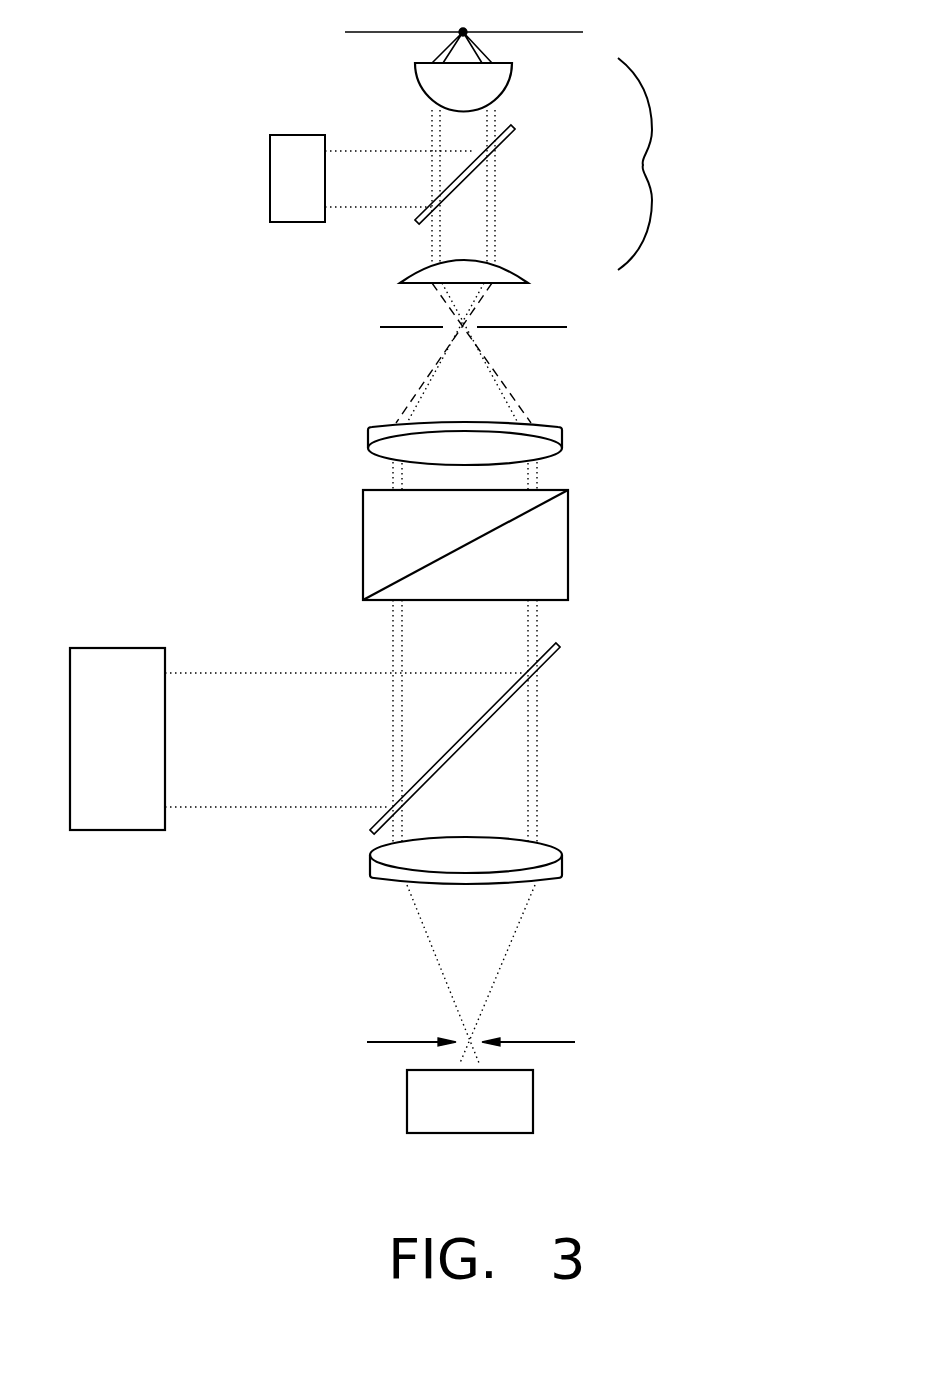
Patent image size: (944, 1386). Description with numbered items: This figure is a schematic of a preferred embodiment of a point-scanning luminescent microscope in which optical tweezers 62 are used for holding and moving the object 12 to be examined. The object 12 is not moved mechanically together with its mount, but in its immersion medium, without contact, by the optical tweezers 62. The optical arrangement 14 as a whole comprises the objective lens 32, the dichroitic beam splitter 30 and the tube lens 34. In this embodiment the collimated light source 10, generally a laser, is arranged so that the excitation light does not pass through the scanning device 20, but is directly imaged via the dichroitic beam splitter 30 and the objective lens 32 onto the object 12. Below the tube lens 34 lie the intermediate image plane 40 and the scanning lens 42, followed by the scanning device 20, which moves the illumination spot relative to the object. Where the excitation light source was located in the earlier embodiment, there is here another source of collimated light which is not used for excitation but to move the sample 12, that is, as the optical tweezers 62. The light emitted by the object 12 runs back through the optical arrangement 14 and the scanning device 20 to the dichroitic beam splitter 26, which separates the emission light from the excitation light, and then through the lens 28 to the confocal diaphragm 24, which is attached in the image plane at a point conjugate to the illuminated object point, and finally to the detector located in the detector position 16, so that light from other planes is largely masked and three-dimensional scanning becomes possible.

The collimated light source 10 is at (298, 221).
The object 12 is at (492, 32).
The optical arrangement 14 is at (657, 164).
The detector position 16 is at (527, 1113).
The scanning device 20 is at (565, 546).
The confocal diaphragm 24 is at (496, 1043).
The dichroitic beam splitter 26 is at (467, 743).
The lens 28 is at (542, 852).
The dichroitic beam splitter 30 is at (463, 182).
The objective lens 32 is at (490, 82).
The tube lens 34 is at (500, 273).
The intermediate image plane 40 is at (495, 327).
The scanning lens 42 is at (540, 447).
The optical tweezers 62 is at (110, 830).